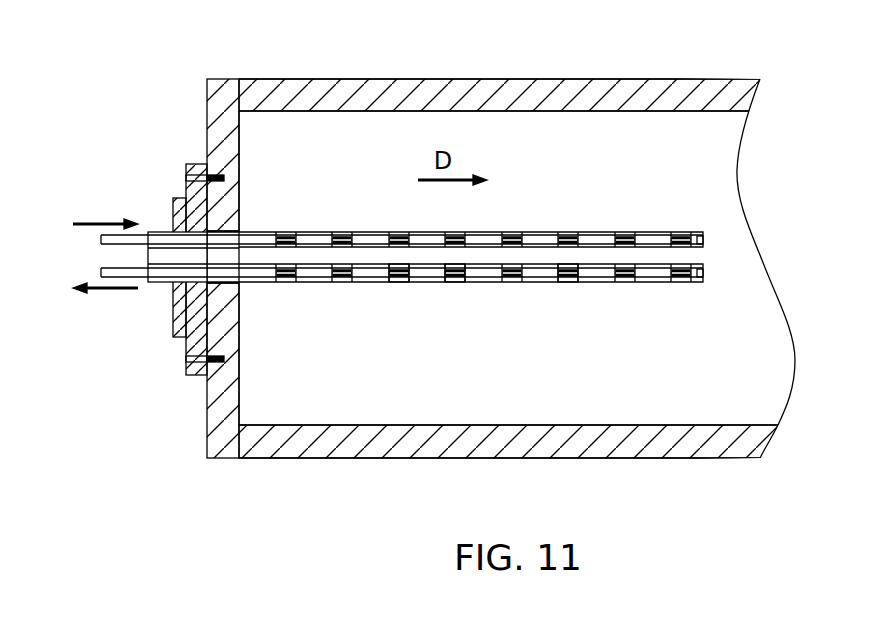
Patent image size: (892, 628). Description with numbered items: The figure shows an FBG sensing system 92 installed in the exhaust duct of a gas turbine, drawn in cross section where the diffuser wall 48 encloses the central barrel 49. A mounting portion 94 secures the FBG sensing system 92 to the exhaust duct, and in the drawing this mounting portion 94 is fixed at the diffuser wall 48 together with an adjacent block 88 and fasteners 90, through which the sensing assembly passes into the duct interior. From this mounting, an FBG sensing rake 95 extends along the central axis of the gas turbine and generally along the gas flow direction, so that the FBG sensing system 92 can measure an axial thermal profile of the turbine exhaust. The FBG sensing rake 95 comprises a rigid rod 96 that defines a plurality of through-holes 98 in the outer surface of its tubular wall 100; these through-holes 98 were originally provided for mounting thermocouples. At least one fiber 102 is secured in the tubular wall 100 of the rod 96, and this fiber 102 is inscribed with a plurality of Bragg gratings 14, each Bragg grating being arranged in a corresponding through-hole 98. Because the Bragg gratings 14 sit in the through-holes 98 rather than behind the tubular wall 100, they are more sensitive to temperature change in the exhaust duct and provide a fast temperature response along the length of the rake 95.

The Bragg gratings 14 is at (168, 248).
The diffuser wall 48 is at (224, 95).
The central barrel 49 is at (295, 407).
The bushing 88 is at (188, 360).
The fastener 90 is at (225, 352).
The FBG sensing system 92 is at (380, 60).
The mounting portion 94 is at (193, 164).
The FBG sensing rake 95 is at (586, 233).
The rigid rod 96 is at (357, 283).
The through-holes 98 is at (459, 282).
The tubular wall 100 is at (415, 282).
The fiber 102 is at (556, 282).